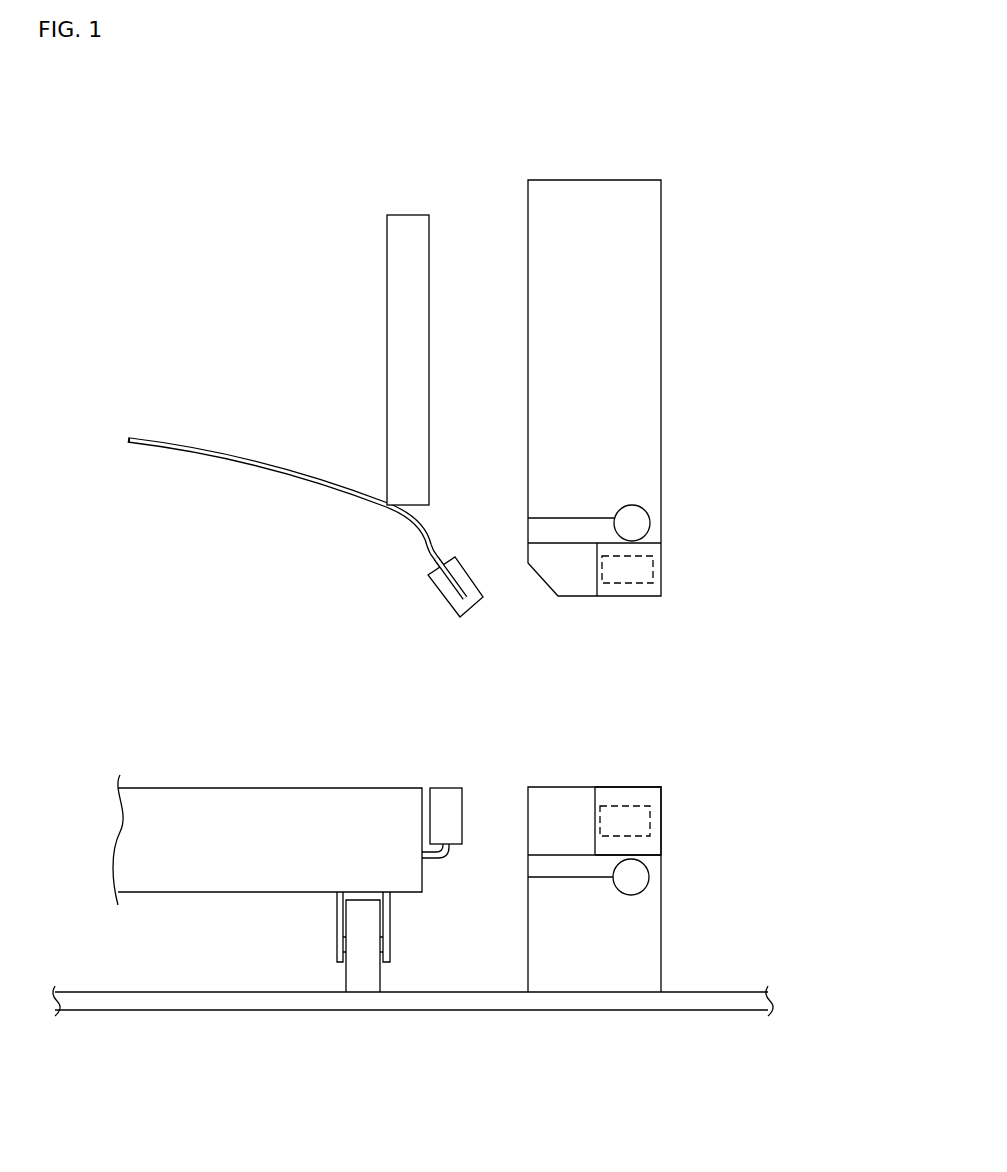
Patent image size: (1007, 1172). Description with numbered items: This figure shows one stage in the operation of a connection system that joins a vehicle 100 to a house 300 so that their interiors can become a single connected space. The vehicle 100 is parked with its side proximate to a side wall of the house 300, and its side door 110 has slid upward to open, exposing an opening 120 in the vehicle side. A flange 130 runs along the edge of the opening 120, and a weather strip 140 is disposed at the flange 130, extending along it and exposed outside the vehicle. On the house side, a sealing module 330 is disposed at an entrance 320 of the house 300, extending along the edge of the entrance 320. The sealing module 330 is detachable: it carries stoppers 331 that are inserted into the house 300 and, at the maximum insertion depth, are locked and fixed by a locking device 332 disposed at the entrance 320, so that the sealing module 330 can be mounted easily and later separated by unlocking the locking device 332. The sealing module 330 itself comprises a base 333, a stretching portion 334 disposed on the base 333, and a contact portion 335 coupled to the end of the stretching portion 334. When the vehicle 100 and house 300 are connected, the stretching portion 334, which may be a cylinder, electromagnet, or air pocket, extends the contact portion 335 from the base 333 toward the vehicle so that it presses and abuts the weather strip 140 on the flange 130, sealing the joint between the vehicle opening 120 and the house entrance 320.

The vehicle 100 is at (266, 381).
The door 110 is at (406, 215).
The opening 120 is at (456, 709).
The flange 130 is at (437, 588).
The weather strip 140 is at (408, 622).
The house 300 is at (632, 348).
The entrance 320 is at (645, 825).
The sealing module 330 is at (632, 499).
The stoppers 331 is at (560, 530).
The locking device 332 is at (636, 521).
The base 333 is at (678, 802).
The stretching portion 334 is at (640, 826).
The contact portion 335 is at (558, 800).